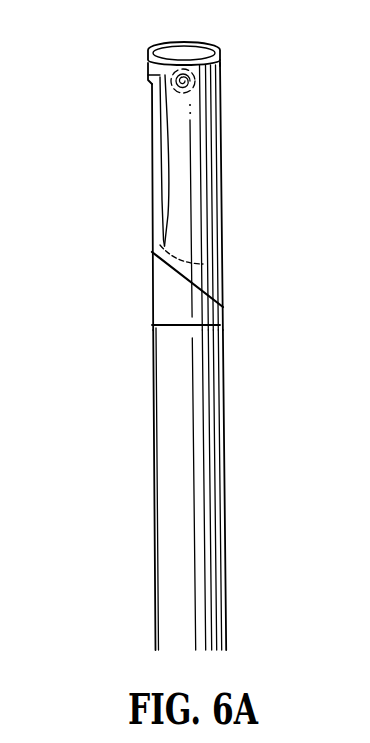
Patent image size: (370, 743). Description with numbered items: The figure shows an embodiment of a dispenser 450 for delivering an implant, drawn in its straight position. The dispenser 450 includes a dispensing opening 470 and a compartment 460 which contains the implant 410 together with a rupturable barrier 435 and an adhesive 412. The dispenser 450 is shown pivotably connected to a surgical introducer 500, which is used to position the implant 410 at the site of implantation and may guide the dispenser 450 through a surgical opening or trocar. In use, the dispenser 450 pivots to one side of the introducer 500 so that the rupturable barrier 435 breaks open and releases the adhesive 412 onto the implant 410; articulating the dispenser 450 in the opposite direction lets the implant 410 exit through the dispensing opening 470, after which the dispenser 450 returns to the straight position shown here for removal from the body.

The implant 410 is at (151, 104).
The adhesive 412 is at (165, 305).
The rupturable barrier 435 is at (168, 274).
The dispenser 450 is at (149, 45).
The compartment 460 is at (197, 277).
The dispensing opening 470 is at (147, 76).
The surgical introducer 500 is at (228, 503).